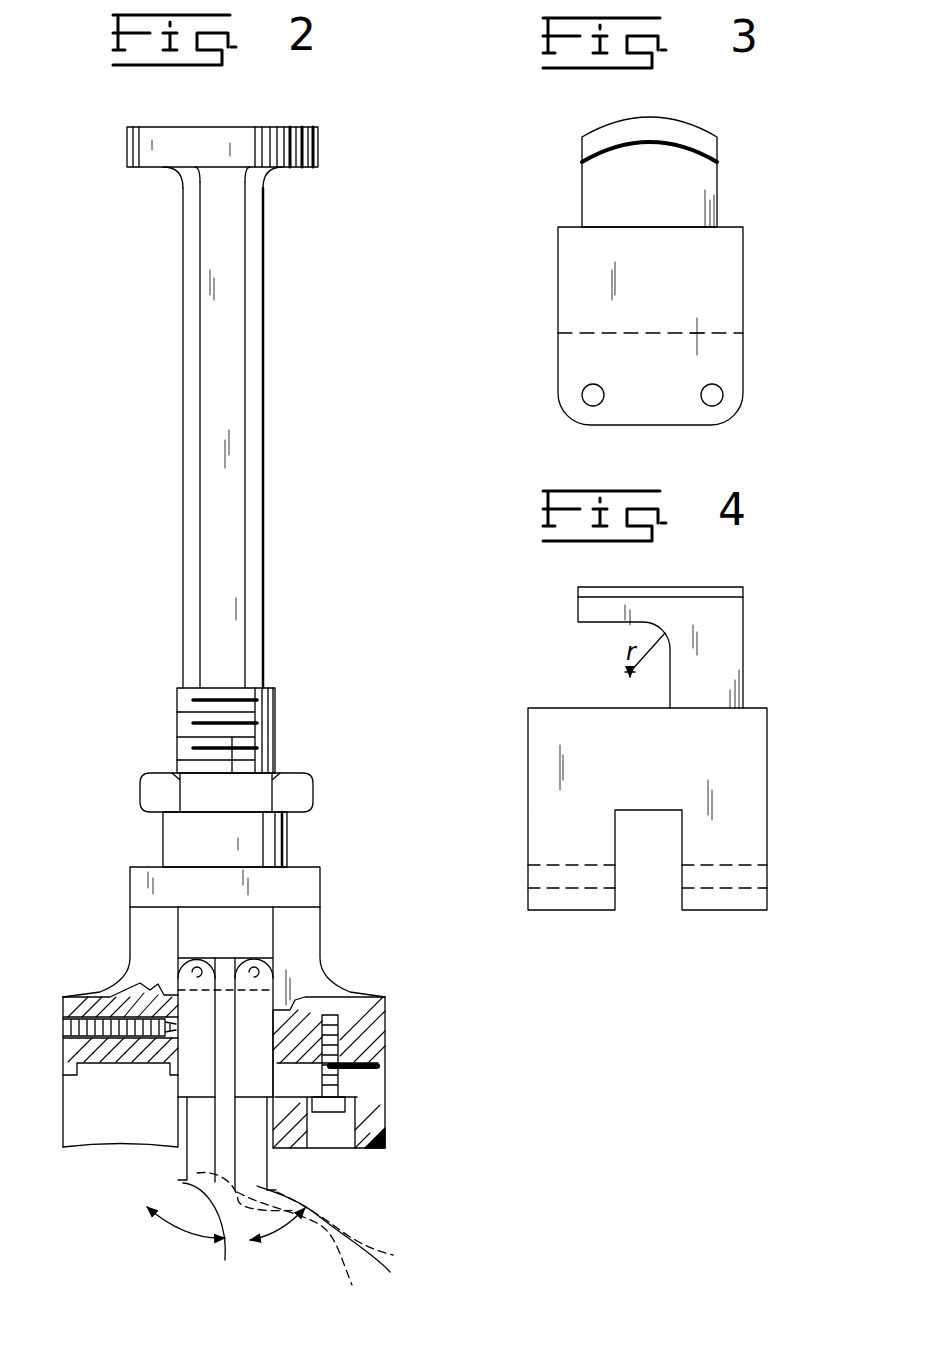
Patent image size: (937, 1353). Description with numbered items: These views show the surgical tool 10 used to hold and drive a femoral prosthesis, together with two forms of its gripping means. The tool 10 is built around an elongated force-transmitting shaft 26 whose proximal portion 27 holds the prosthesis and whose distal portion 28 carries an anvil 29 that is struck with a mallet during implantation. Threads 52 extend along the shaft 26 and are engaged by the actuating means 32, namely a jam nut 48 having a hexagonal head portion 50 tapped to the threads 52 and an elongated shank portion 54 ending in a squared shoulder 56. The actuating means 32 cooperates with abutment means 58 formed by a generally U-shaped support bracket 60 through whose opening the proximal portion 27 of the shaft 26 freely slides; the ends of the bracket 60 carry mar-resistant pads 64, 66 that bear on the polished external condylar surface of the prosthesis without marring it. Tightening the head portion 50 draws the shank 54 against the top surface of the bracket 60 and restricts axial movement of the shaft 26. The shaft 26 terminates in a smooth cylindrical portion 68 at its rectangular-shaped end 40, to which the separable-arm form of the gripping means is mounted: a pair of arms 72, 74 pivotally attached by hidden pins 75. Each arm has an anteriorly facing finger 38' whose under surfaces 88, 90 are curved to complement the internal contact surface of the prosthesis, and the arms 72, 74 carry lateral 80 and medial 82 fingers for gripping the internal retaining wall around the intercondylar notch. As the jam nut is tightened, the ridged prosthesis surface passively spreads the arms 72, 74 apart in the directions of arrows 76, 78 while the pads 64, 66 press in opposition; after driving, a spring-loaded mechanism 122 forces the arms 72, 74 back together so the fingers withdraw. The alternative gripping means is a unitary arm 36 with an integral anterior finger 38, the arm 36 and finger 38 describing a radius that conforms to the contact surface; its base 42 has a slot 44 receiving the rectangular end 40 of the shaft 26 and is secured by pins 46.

In FIG. 2, the surgical tool 10 is at (357, 265).
In FIG. 2, the shaft 26 is at (263, 418).
In FIG. 2, the proximal portion 27 is at (300, 898).
In FIG. 2, the distal portion 28 is at (214, 172).
In FIG. 2, the anvil 29 is at (318, 137).
In FIG. 2, the actuating means 32 is at (166, 763).
In FIG. 3, the unitary arm 36 is at (608, 185).
In FIG. 4, the unitary arm 36 is at (722, 657).
In FIG. 2, the finger 38 is at (405, 1265).
In FIG. 3, the finger 38 is at (604, 149).
In FIG. 4, the finger 38 is at (609, 589).
In FIG. 2, the anteriorly facing finger 38' is at (220, 1238).
In FIG. 2, the end of the shaft 40 is at (255, 962).
In FIG. 3, the base 42 is at (582, 273).
In FIG. 4, the base 42 is at (540, 797).
In FIG. 3, the slot 44 is at (556, 364).
In FIG. 4, the slot 44 is at (643, 906).
In FIG. 3, the pins 46 is at (582, 395).
In FIG. 2, the jam nut 48 is at (163, 817).
In FIG. 2, the hexagonal head portion 50 is at (300, 790).
In FIG. 2, the threads 52 is at (178, 693).
In FIG. 2, the shank portion 54 is at (288, 838).
In FIG. 2, the squared shoulder 56 is at (172, 868).
In FIG. 2, the abutment means 58 is at (443, 1012).
In FIG. 2, the support bracket 60 is at (310, 925).
In FIG. 2, the mar-resistant pad 64 is at (385, 1115).
In FIG. 2, the mar-resistant pad 66 is at (108, 1130).
In FIG. 2, the cylindrical portion 68 is at (252, 958).
In FIG. 2, the arm 72 is at (283, 1178).
In FIG. 2, the arm 74 is at (192, 1147).
In FIG. 2, the pins 75 is at (200, 970).
In FIG. 2, the arrow 76 is at (273, 1232).
In FIG. 2, the arrow 78 is at (185, 1232).
In FIG. 2, the lateral finger 80 is at (270, 1185).
In FIG. 2, the medial finger 82 is at (178, 1180).
In FIG. 2, the under surface 88 is at (318, 1252).
In FIG. 2, the under surface 90 is at (356, 1235).
In FIG. 2, the spring-loaded mechanism 122 is at (122, 1003).